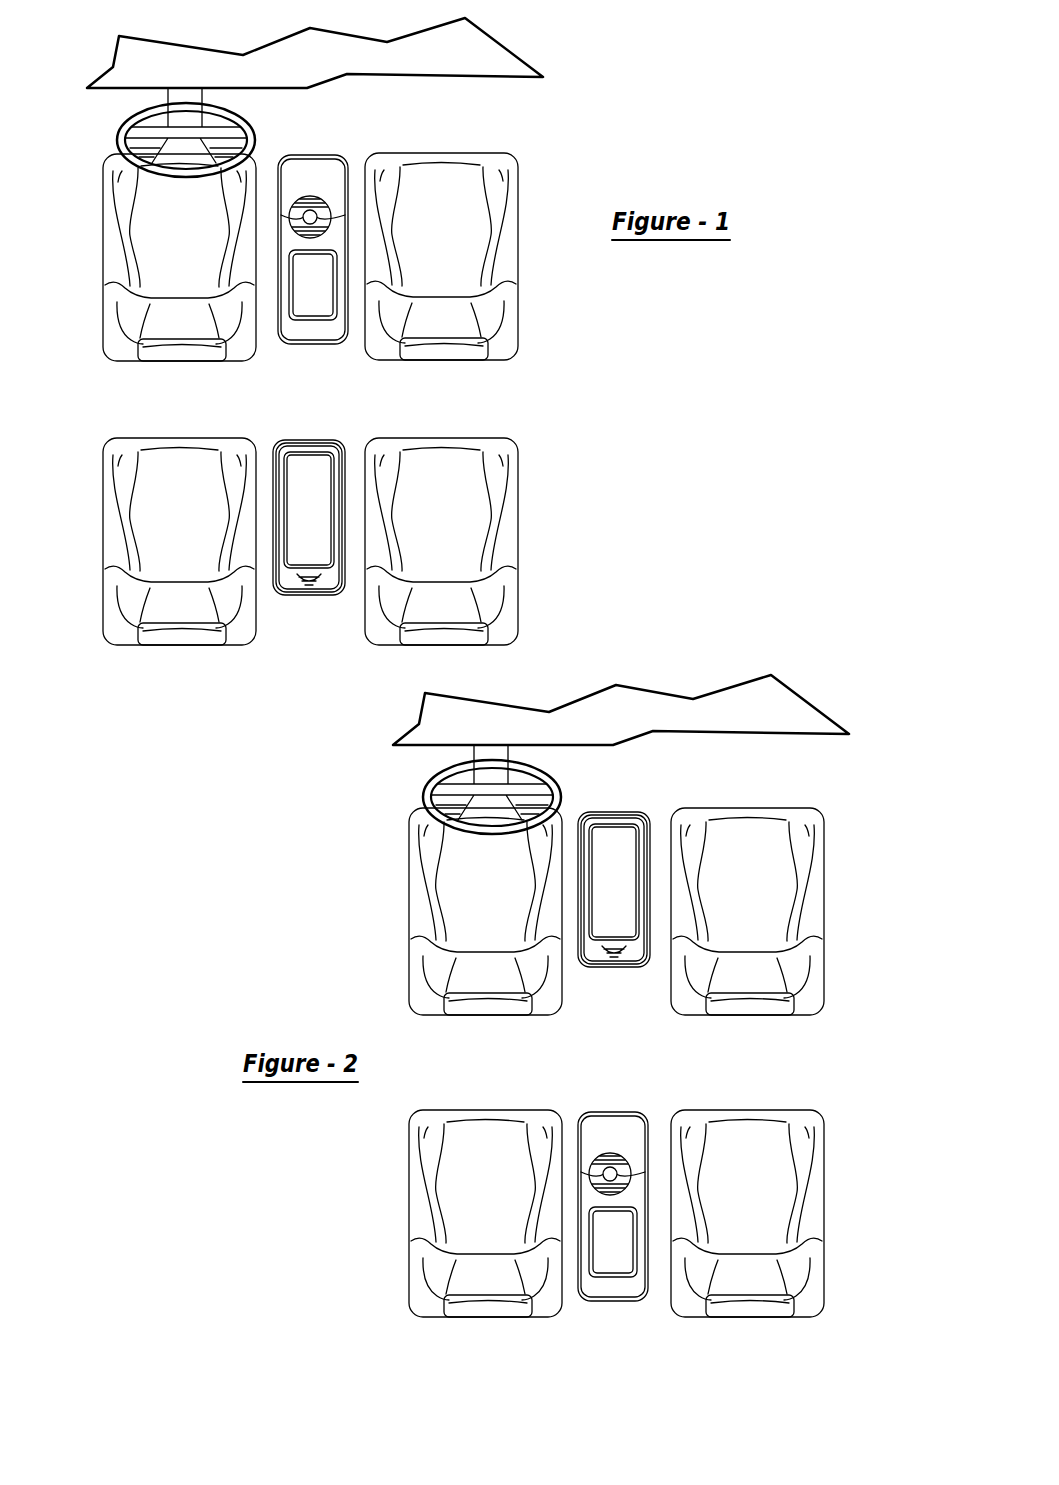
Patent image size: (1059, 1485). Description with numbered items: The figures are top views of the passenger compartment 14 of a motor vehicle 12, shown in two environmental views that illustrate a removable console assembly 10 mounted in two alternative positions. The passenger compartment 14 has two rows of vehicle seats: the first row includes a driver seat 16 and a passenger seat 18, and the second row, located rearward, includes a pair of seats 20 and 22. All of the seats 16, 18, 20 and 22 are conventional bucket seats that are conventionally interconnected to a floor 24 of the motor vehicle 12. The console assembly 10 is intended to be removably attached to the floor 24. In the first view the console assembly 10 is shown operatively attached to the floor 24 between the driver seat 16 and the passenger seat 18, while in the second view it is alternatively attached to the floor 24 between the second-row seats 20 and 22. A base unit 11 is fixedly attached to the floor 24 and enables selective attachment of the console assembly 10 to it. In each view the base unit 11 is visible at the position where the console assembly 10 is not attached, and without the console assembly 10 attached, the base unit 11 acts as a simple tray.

In FIG. 1, the console assembly 10 is at (343, 153).
In FIG. 2, the console assembly 10 is at (652, 1111).
In FIG. 1, the base unit 11 is at (330, 607).
In FIG. 2, the base unit 11 is at (637, 977).
In FIG. 1, the motor vehicle 12 is at (550, 130).
In FIG. 2, the motor vehicle 12 is at (802, 655).
In FIG. 1, the passenger compartment 14 is at (82, 180).
In FIG. 2, the passenger compartment 14 is at (372, 838).
In FIG. 1, the driver seat 16 is at (158, 247).
In FIG. 2, the driver seat 16 is at (453, 915).
In FIG. 1, the passenger seat 18 is at (488, 231).
In FIG. 2, the passenger seat 18 is at (777, 887).
In FIG. 1, the seat 20 is at (158, 462).
In FIG. 2, the seat 20 is at (460, 1220).
In FIG. 1, the seat 22 is at (460, 533).
In FIG. 2, the seat 22 is at (753, 1203).
In FIG. 1, the floor 24 is at (284, 404).
In FIG. 2, the floor 24 is at (554, 1068).